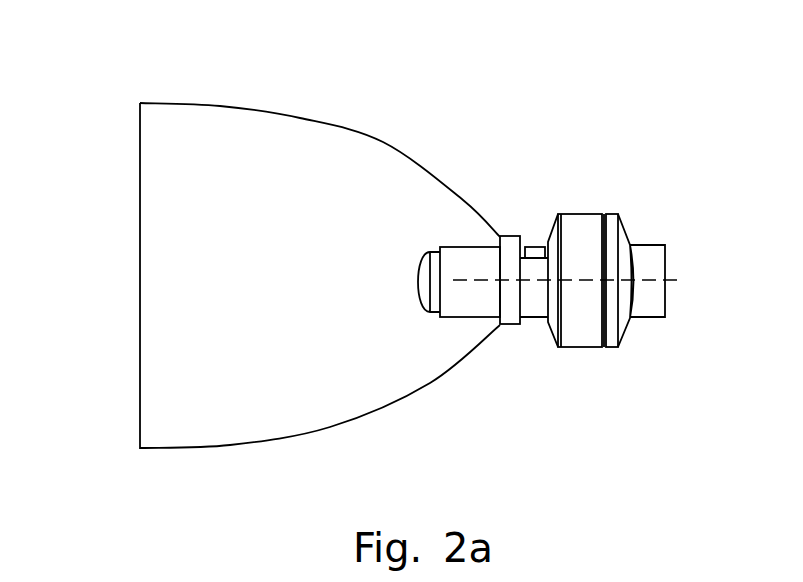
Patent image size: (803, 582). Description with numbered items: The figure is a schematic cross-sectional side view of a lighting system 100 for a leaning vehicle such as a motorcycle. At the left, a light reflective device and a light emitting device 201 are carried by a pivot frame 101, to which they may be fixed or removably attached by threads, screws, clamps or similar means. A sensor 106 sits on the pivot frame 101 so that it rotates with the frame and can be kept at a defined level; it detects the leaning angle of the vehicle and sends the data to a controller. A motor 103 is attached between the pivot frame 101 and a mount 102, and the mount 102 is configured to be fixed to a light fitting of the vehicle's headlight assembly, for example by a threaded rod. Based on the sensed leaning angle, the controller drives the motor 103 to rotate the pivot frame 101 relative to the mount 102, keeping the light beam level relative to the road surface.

The lighting system 100 is at (116, 36).
The light emitting device 201 is at (411, 292).
The pivot frame 101 is at (535, 318).
The sensor 106 is at (533, 246).
The motor 103 is at (604, 374).
The mount 102 is at (652, 318).